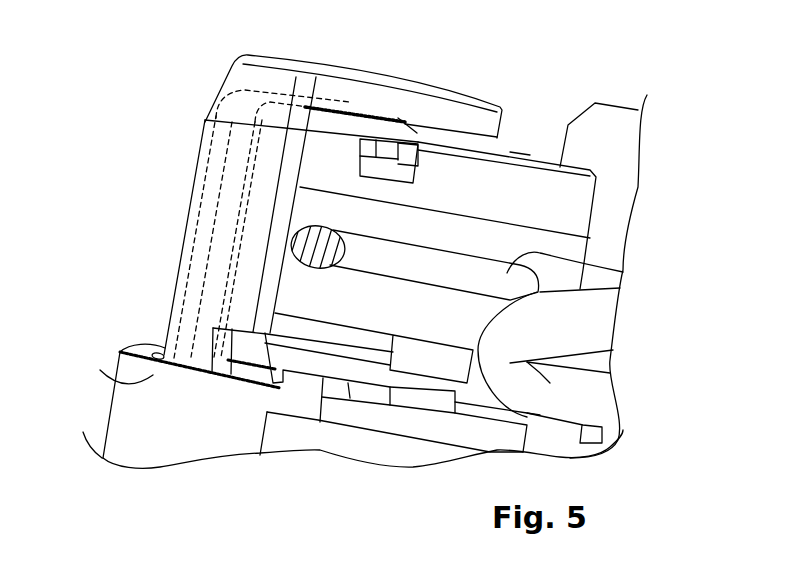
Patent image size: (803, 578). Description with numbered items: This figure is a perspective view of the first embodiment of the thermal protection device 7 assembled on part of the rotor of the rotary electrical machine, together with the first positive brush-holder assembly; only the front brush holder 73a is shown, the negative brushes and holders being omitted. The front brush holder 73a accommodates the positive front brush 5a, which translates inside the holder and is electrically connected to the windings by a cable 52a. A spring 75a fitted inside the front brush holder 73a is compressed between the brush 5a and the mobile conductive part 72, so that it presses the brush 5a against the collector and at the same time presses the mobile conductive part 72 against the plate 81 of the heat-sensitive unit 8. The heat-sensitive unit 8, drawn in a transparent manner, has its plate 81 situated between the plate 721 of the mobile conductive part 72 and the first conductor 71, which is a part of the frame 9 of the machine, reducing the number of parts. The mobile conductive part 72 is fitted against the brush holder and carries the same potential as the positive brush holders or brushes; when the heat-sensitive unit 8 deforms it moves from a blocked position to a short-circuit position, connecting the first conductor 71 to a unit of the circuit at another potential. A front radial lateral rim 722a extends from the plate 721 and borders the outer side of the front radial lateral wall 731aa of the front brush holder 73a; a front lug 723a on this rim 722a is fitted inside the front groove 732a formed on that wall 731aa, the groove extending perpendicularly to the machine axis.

The mobile conductive part 72 is at (253, 106).
The front radial lateral rim 722a is at (357, 130).
The front lug 723a is at (413, 158).
The front groove 732a is at (377, 178).
The outer radial lateral front wall 731aa is at (520, 153).
The thermal protection device 7 is at (560, 201).
The positive front brush 5a is at (623, 273).
The cable 52a is at (570, 327).
The spring 75a is at (330, 232).
The heat-sensitive unit 8 is at (177, 283).
The plate 81 is at (190, 203).
The plate 721 is at (210, 253).
The first conductor 71 is at (112, 378).
The frame 9 is at (193, 423).
The front brush holder 73a is at (381, 300).